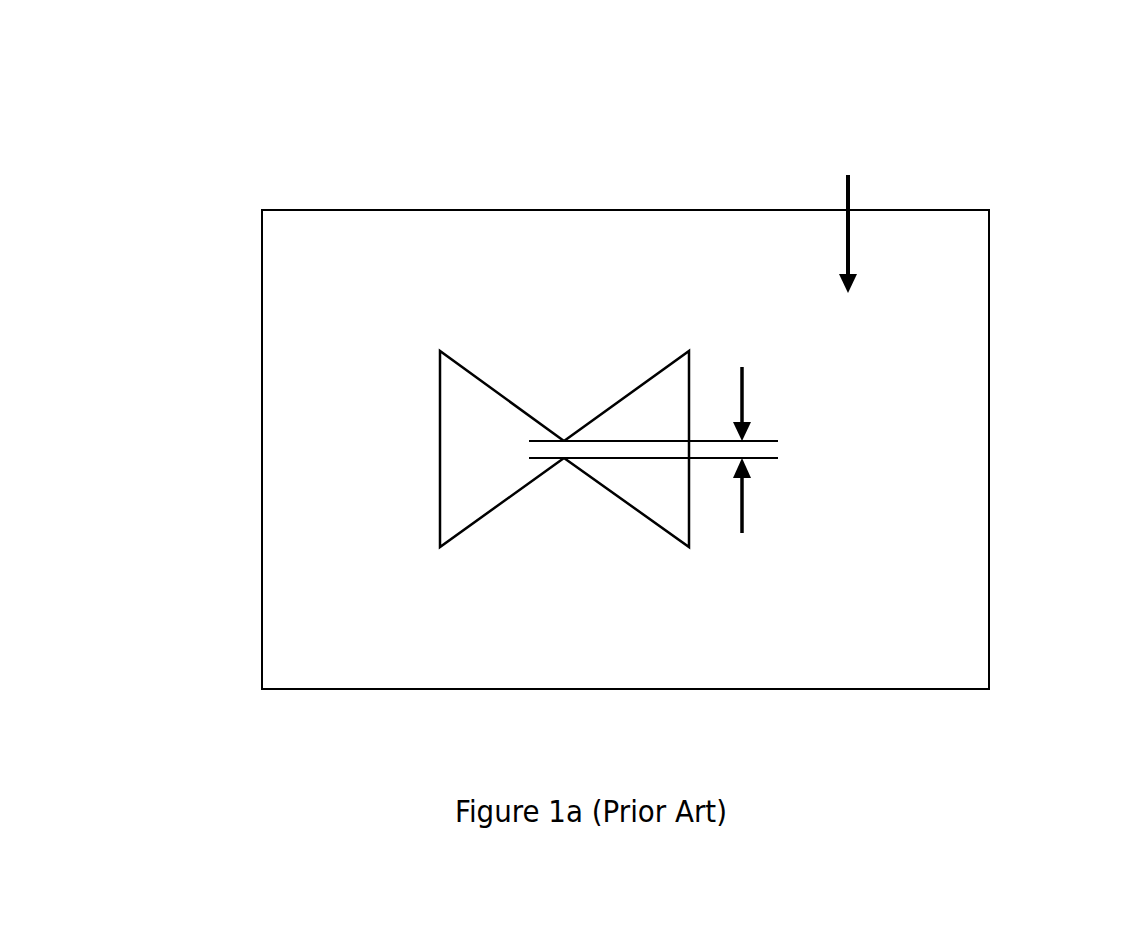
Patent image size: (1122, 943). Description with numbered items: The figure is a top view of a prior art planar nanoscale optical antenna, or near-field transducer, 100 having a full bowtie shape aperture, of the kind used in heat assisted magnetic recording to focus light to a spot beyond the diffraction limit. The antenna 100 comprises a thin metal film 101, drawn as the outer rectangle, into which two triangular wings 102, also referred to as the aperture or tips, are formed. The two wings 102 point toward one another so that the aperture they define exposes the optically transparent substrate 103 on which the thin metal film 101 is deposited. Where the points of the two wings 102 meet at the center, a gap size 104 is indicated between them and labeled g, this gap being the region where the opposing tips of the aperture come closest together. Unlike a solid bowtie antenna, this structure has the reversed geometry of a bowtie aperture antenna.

The nanoscale optical antenna 100 is at (259, 174).
The thin metal film 101 is at (967, 662).
The wings 102 is at (689, 367).
The optically transparent substrate 103 is at (510, 451).
The gap size 104 is at (564, 458).